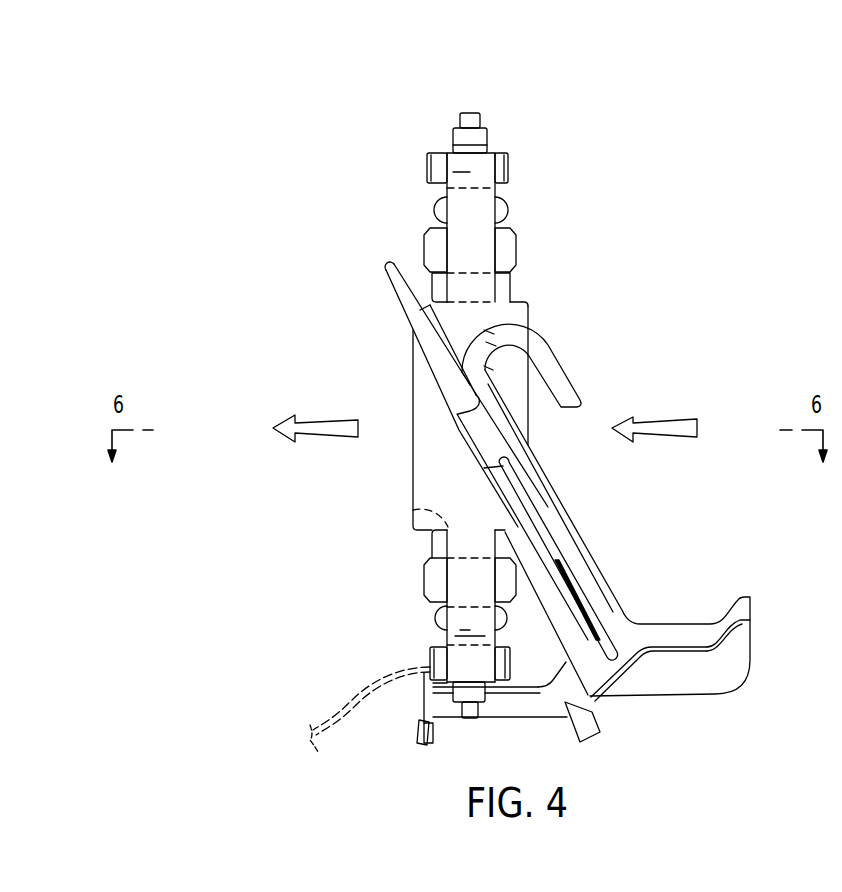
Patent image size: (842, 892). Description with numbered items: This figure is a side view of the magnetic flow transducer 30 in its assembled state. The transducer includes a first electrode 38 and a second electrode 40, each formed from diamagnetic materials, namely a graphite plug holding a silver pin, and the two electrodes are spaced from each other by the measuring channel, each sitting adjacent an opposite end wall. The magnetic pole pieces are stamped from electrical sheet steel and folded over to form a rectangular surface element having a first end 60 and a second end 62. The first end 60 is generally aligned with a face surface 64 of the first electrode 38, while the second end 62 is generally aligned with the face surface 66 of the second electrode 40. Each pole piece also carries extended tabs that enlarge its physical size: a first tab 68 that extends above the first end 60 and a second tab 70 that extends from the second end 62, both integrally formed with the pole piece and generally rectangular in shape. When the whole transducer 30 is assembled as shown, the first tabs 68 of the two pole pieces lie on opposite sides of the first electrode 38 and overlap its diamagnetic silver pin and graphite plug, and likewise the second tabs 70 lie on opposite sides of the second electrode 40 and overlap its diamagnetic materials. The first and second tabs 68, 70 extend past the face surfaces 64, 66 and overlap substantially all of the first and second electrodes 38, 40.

The magnetic flow transducer 30 is at (592, 330).
The first electrode 38 is at (520, 192).
The second electrode 40 is at (406, 579).
The first end 60 is at (510, 302).
The second end 62 is at (427, 533).
The face surface 64 is at (505, 299).
The face surface 66 is at (413, 510).
The first tab 68 is at (462, 205).
The second tab 70 is at (455, 624).